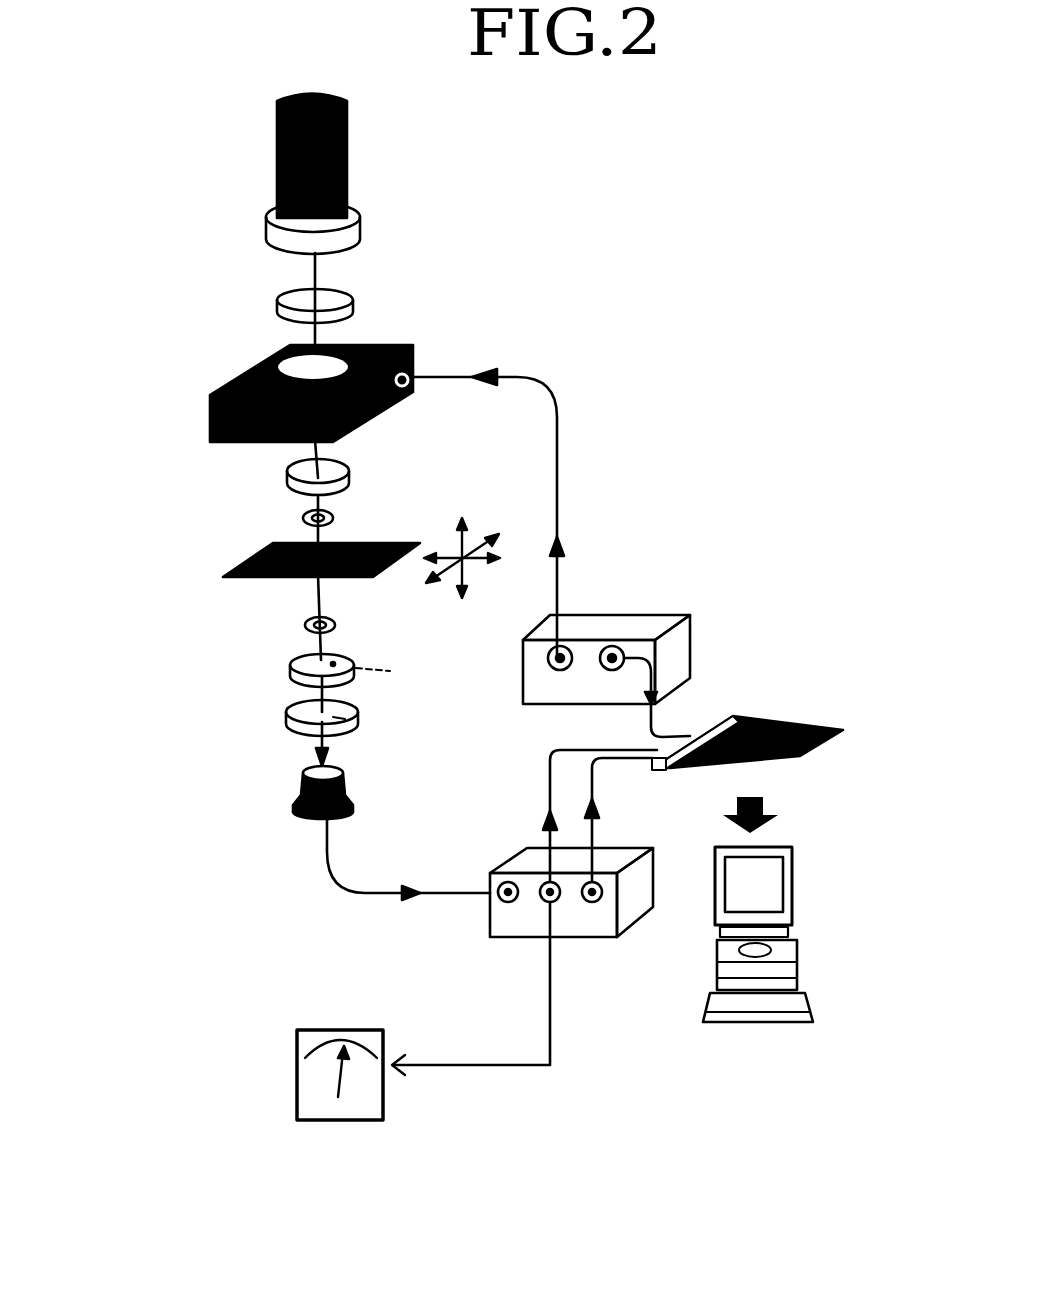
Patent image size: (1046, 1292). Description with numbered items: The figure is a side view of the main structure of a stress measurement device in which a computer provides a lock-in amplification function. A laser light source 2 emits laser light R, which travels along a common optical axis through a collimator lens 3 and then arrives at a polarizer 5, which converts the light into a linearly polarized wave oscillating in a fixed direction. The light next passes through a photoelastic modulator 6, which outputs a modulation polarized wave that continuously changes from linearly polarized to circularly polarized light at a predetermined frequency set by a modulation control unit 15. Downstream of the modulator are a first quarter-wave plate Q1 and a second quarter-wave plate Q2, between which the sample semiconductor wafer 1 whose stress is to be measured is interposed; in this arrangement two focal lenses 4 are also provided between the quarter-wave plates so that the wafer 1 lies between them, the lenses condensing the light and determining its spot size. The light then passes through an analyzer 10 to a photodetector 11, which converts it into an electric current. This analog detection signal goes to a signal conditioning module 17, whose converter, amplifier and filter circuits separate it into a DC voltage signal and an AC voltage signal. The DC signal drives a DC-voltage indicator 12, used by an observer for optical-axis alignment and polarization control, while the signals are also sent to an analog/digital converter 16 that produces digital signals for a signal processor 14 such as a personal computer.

The laser light source 2 is at (272, 152).
The collimator lens 3 is at (263, 228).
The polarizer 5 is at (293, 310).
The laser light R is at (313, 329).
The photoelastic modulator (PEM) 6 is at (210, 415).
The first quarter-wave plate Q1 is at (275, 473).
The focal lens 4 is at (293, 515).
The sample semiconductor wafer 1 is at (223, 577).
The second quarter-wave plate Q2 is at (282, 667).
The analyzer 10 is at (268, 716).
The photodetector 11 is at (303, 793).
The signal conditioning module 17 is at (485, 906).
The DC-voltage indicator 12 is at (290, 1075).
The modulation control unit 15 is at (690, 652).
The analog/digital converter 16 is at (838, 752).
The signal processor 14 is at (803, 873).